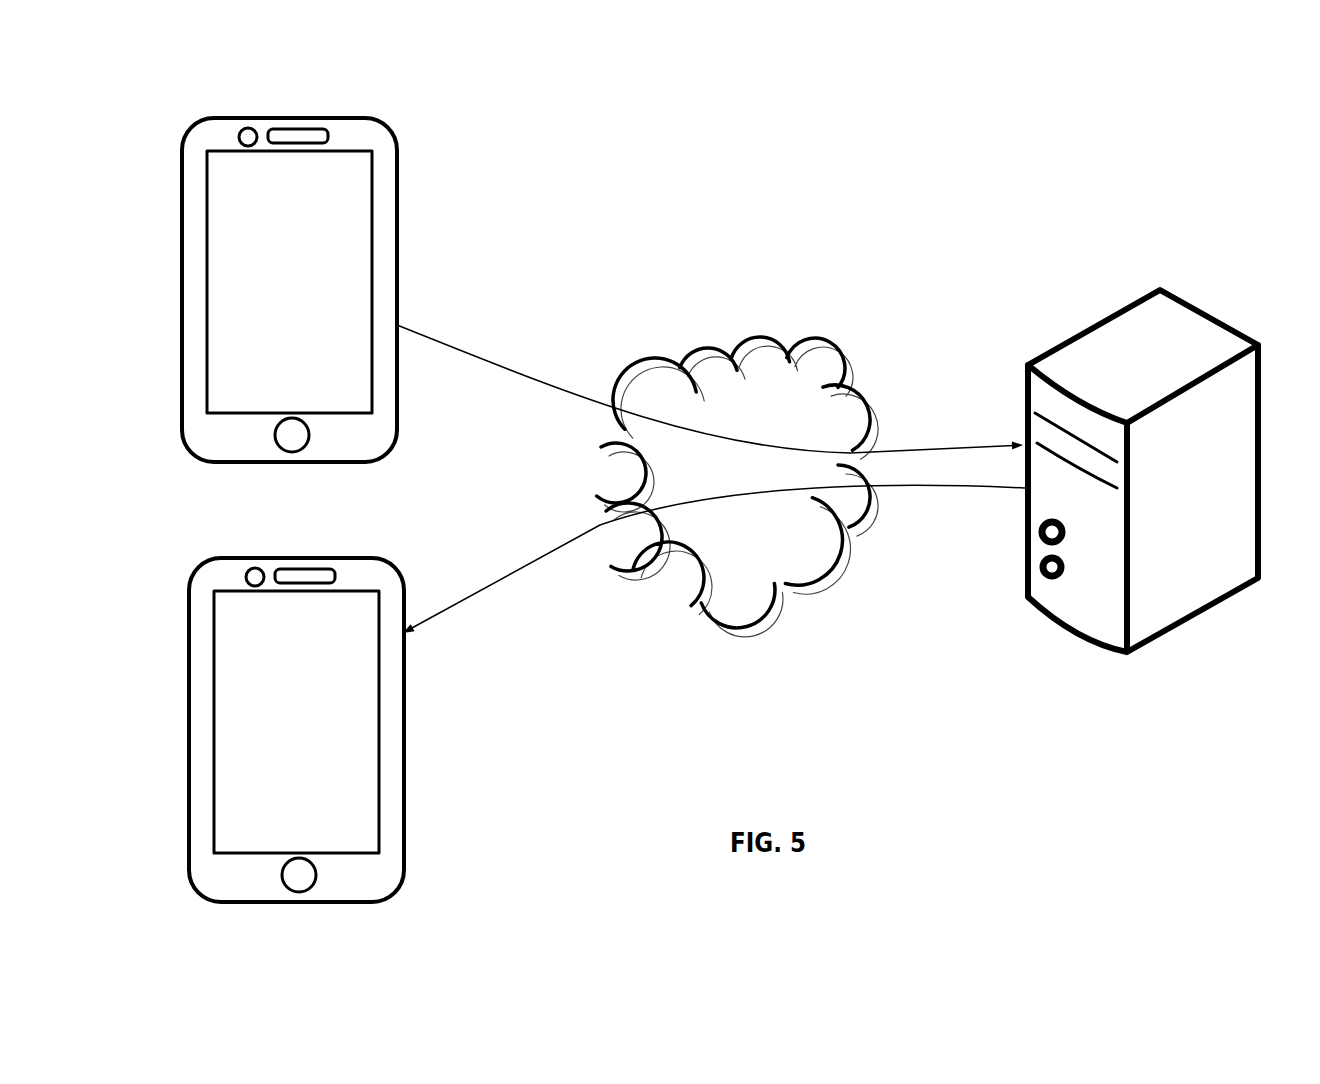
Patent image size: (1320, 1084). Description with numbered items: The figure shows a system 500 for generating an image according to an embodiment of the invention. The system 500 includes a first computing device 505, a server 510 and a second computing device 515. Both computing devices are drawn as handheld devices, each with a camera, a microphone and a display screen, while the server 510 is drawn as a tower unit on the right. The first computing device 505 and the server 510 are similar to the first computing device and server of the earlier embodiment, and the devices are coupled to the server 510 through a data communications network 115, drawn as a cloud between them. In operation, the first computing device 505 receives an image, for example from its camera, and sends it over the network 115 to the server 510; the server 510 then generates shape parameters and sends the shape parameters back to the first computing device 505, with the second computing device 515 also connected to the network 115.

The system 500 is at (919, 141).
The first computing device 505 is at (398, 173).
The second computing device 515 is at (315, 716).
The data communications network 115 is at (700, 346).
The server 510 is at (1070, 340).